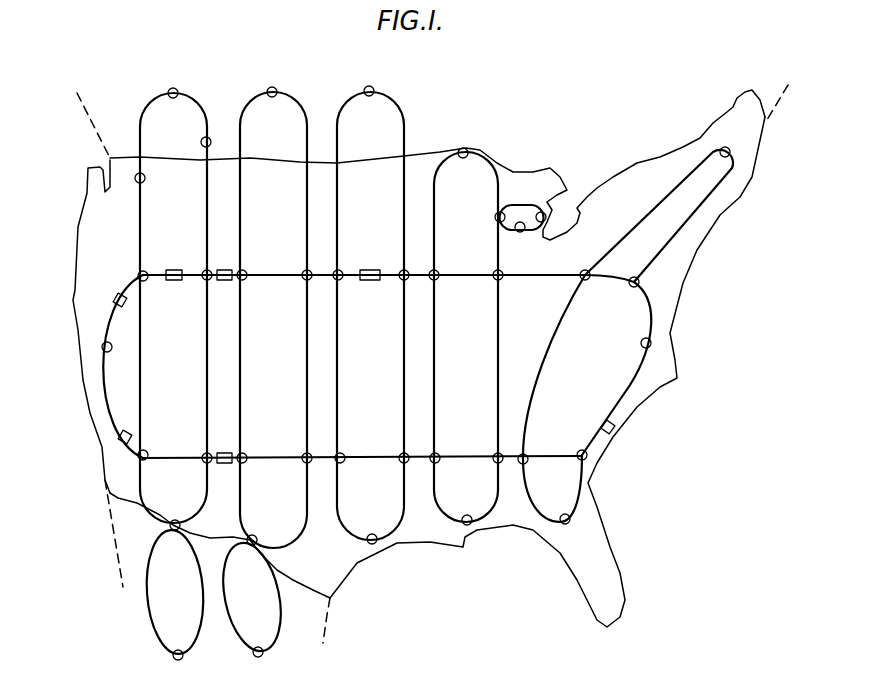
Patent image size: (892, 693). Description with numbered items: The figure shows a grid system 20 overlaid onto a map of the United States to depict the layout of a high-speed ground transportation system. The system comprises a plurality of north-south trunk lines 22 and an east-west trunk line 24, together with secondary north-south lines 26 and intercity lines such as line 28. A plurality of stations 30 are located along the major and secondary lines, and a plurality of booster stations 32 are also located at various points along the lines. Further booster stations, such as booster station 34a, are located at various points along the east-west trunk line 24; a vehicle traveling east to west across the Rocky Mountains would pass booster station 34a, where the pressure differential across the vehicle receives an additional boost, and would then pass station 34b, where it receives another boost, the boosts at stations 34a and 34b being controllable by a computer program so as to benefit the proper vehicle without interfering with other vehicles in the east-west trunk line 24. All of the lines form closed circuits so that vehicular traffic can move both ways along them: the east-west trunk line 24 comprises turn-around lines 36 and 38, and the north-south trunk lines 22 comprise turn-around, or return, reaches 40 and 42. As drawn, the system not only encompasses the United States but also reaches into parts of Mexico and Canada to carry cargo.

The grid system 20 is at (413, 122).
The north-south trunk lines 22 is at (405, 145).
The east-west trunk line 24 is at (255, 270).
The secondary north-south lines 26 is at (153, 625).
The intercity line 28 is at (520, 207).
The stations 30 is at (340, 272).
The booster stations 32 is at (367, 282).
The booster station 34a is at (223, 280).
The station 34b is at (177, 280).
The turn-around line 36 is at (105, 377).
The turn-around line 38 is at (650, 320).
The return reach 40 is at (188, 95).
The return reach 42 is at (277, 548).